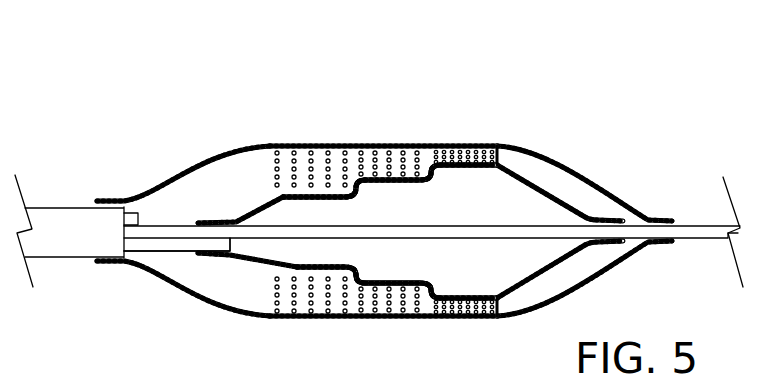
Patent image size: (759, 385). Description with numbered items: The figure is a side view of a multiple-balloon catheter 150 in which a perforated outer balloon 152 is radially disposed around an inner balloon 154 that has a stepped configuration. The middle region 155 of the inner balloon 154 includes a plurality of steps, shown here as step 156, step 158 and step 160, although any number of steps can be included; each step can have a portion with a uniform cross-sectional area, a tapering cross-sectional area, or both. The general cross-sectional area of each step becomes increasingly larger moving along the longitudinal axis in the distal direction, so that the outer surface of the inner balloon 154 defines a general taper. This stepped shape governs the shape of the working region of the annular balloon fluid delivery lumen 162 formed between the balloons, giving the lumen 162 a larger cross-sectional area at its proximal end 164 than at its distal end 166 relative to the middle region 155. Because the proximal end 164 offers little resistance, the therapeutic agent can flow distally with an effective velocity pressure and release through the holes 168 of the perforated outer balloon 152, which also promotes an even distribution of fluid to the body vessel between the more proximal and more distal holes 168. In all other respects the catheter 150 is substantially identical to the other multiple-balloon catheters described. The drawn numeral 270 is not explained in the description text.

The multiple-balloon catheter 150 is at (188, 155).
The perforated outer balloon 152 is at (345, 143).
The inner balloon 154 is at (533, 188).
The middle region 155 is at (498, 80).
The step 156 is at (326, 190).
The step 158 is at (390, 176).
The step 160 is at (463, 146).
The annular balloon fluid delivery lumen 162 is at (369, 148).
The proximal end 164 is at (292, 172).
The distal end 166 is at (490, 145).
The holes 168 is at (340, 163).
The inner shaft lumen 270 is at (255, 311).